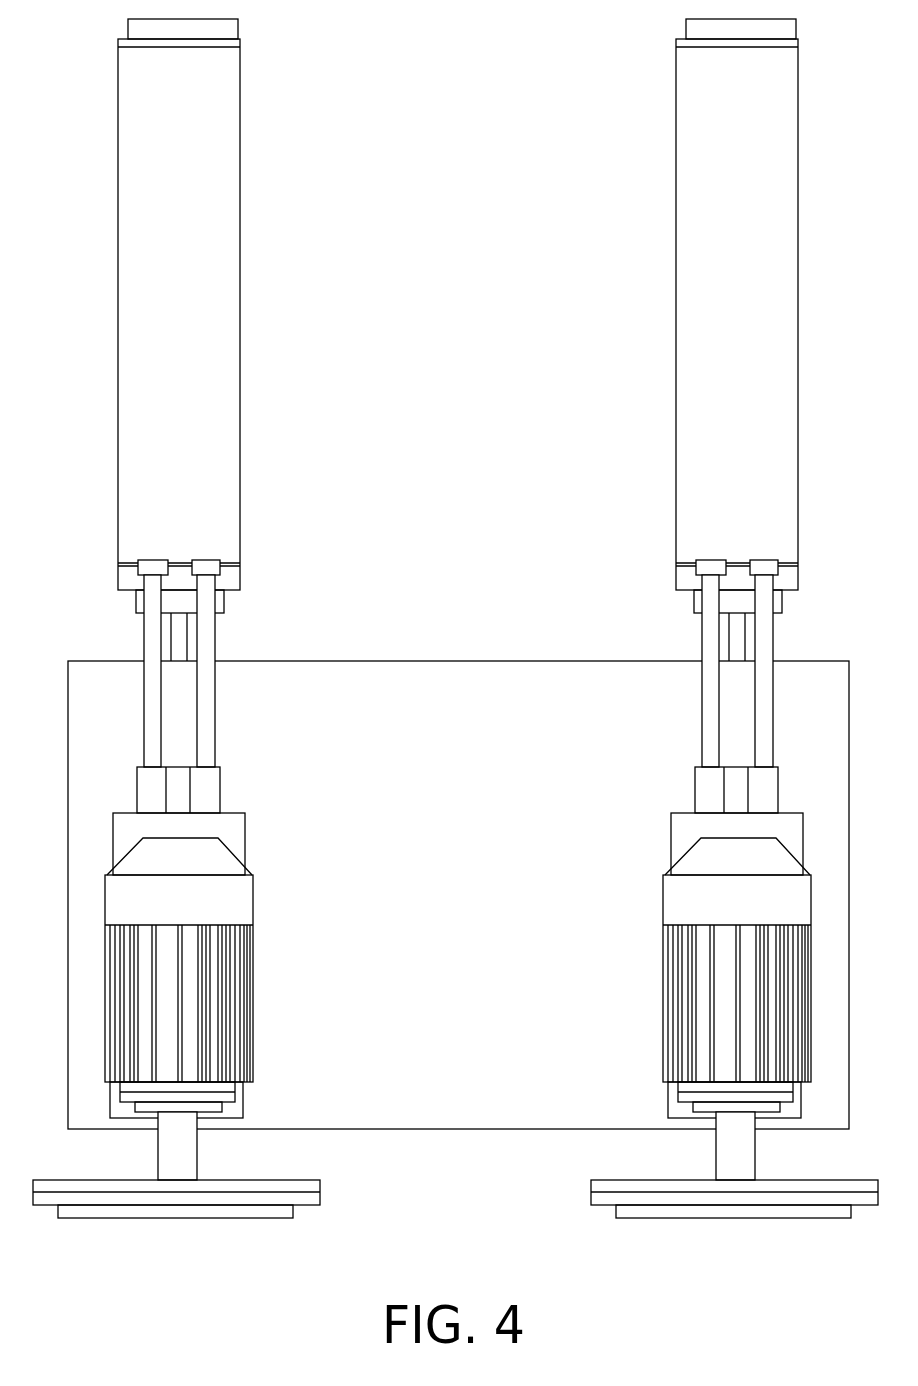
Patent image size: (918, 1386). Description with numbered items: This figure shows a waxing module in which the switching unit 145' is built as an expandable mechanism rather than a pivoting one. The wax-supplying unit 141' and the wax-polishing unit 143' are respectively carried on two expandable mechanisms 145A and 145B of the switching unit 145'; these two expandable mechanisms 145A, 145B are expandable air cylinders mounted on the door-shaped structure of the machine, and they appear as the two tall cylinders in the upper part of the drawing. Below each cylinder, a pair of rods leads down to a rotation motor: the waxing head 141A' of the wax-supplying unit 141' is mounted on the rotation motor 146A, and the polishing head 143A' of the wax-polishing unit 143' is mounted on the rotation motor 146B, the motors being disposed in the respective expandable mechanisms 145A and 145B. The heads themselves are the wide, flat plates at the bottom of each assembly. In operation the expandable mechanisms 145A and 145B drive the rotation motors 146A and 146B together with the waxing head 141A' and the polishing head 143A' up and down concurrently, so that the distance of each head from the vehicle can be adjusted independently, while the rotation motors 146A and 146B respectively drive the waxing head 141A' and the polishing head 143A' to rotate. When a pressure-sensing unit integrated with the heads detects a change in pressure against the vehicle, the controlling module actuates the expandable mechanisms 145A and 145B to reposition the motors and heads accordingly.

The expandable mechanism 145B is at (235, 228).
The expandable mechanism 145A is at (686, 228).
The switching unit 145' is at (665, 416).
The rotation motor 146B is at (252, 948).
The rotation motor 146A is at (665, 948).
The wax-polishing unit 143' is at (229, 1159).
The wax-supplying unit 141' is at (685, 1159).
The polishing head 143A' is at (175, 1248).
The waxing head 141A' is at (733, 1248).